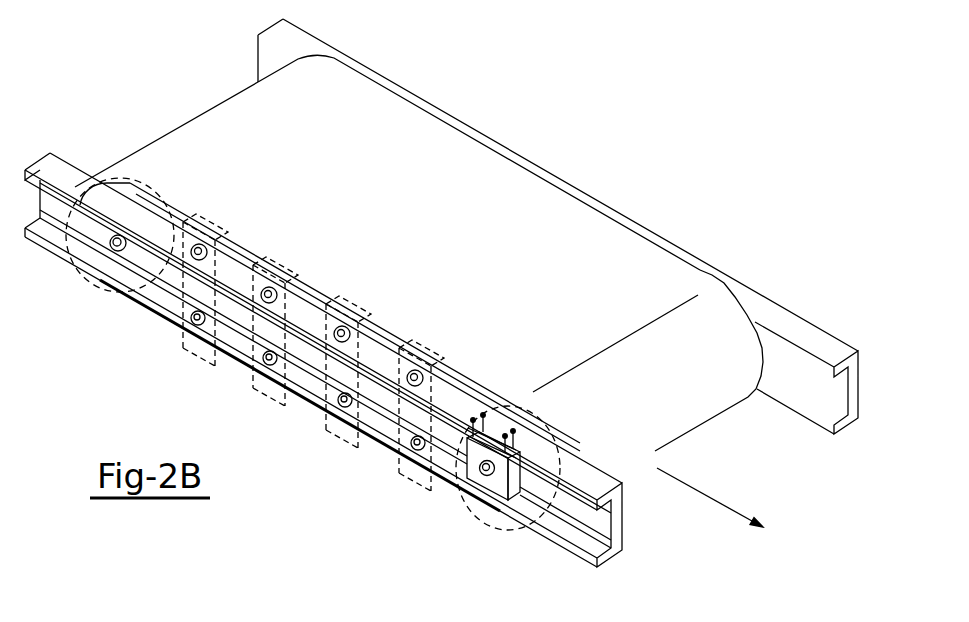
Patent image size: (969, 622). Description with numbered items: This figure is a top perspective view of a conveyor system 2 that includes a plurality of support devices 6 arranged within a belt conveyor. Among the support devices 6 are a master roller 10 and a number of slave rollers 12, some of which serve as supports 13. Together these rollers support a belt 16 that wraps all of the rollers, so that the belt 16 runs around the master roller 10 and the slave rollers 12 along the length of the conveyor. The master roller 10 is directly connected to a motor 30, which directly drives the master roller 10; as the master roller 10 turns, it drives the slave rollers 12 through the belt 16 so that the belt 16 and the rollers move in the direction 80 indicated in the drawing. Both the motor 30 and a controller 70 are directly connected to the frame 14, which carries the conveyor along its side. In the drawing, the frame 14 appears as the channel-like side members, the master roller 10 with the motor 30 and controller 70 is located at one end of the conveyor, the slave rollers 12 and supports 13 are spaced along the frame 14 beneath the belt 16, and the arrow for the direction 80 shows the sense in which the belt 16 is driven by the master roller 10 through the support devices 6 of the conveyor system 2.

The conveyor system 2 is at (461, 64).
The support devices 6 is at (302, 284).
The master roller 10 is at (541, 531).
The slave rollers 12 is at (133, 278).
The supports 13 is at (193, 222).
The frame 14 is at (278, 32).
The belt 16 is at (621, 246).
The motor 30 is at (510, 374).
The controller 70 is at (533, 405).
The direction 80 is at (722, 507).